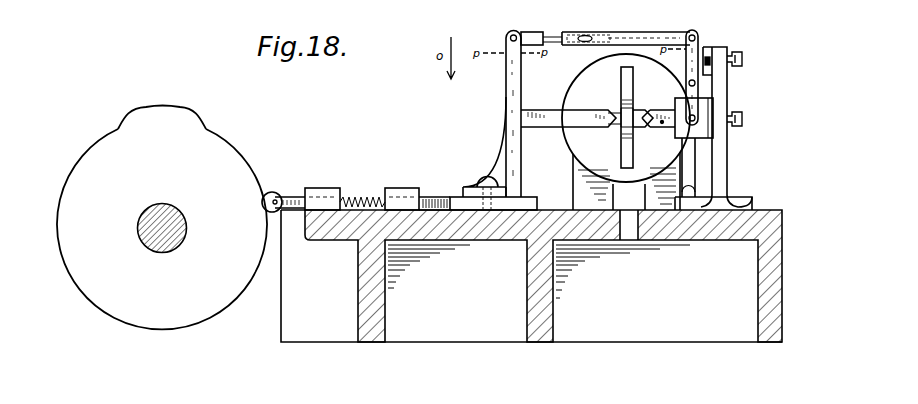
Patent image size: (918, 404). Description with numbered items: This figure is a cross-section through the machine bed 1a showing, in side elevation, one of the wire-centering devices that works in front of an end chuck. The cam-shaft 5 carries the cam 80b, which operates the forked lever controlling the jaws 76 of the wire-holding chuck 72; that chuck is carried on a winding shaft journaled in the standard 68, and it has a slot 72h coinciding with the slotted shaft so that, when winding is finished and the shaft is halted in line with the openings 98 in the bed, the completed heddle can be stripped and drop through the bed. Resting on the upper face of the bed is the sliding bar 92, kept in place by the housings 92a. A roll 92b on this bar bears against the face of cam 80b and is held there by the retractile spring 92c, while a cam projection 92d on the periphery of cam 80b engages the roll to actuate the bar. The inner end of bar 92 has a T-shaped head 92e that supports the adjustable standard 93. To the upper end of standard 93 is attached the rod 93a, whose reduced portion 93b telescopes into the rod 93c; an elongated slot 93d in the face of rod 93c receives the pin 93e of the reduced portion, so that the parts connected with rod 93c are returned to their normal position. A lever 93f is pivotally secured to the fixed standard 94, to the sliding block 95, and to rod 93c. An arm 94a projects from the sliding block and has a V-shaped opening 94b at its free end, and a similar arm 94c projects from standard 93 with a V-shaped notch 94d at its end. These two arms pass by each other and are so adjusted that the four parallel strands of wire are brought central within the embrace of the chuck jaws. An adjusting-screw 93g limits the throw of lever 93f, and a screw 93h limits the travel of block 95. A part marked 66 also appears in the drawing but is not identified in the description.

The base 1a is at (782, 272).
The cam-shaft 5 is at (138, 229).
The shaft coupling 66 is at (591, 119).
The standard 68 is at (606, 202).
The wire-holding chuck 72 is at (573, 98).
The slot 72h is at (620, 108).
The jaws 76 is at (634, 83).
The cam 80b is at (162, 229).
The bar 92 is at (290, 196).
The housings 92a is at (362, 199).
The roll 92b is at (262, 199).
The retractile spring 92c is at (352, 197).
The cam projection 92d is at (172, 103).
The T-shaped head 92e is at (531, 197).
The adjustable standard 93 is at (506, 82).
The rod 93a is at (530, 25).
The reduced portion 93b is at (553, 36).
The rod 93c is at (641, 29).
The elongated slot 93d is at (590, 45).
The pin 93e is at (584, 35).
The lever 93f is at (700, 42).
The adjusting-screw 93g is at (744, 58).
The screw 93h is at (745, 120).
The standard 94 is at (728, 90).
The arm 94a is at (648, 110).
The V-shaped opening 94b is at (643, 128).
The arm 94c is at (565, 128).
The V-shaped opening 94d is at (614, 128).
The sliding block 95 is at (698, 135).
The openings 98 is at (630, 235).